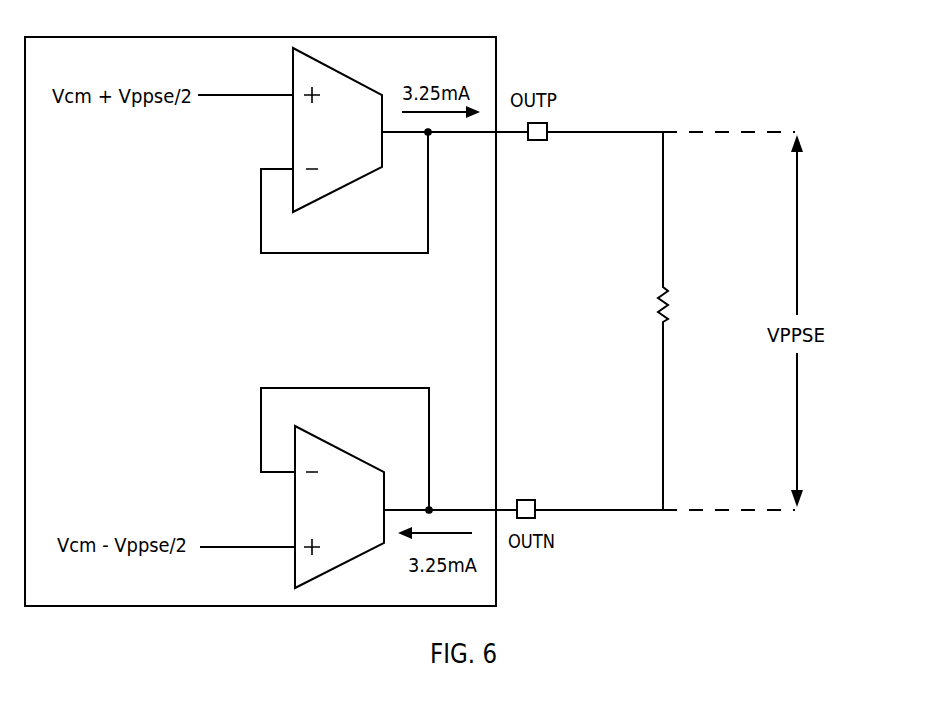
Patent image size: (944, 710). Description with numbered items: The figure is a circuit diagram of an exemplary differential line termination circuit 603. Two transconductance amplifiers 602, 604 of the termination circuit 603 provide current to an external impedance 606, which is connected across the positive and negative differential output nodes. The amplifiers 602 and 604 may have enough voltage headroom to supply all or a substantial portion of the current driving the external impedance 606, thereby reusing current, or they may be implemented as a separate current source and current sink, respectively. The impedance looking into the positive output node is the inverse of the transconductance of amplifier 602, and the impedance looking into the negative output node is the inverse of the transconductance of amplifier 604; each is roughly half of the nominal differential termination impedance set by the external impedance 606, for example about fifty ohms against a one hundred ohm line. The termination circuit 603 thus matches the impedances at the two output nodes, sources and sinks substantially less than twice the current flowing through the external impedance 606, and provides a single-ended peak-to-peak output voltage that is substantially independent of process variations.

The termination circuit 603 is at (172, 37).
The transconductance amplifier 602 is at (293, 71).
The transconductance amplifier 604 is at (295, 515).
The external impedance 606 is at (662, 293).